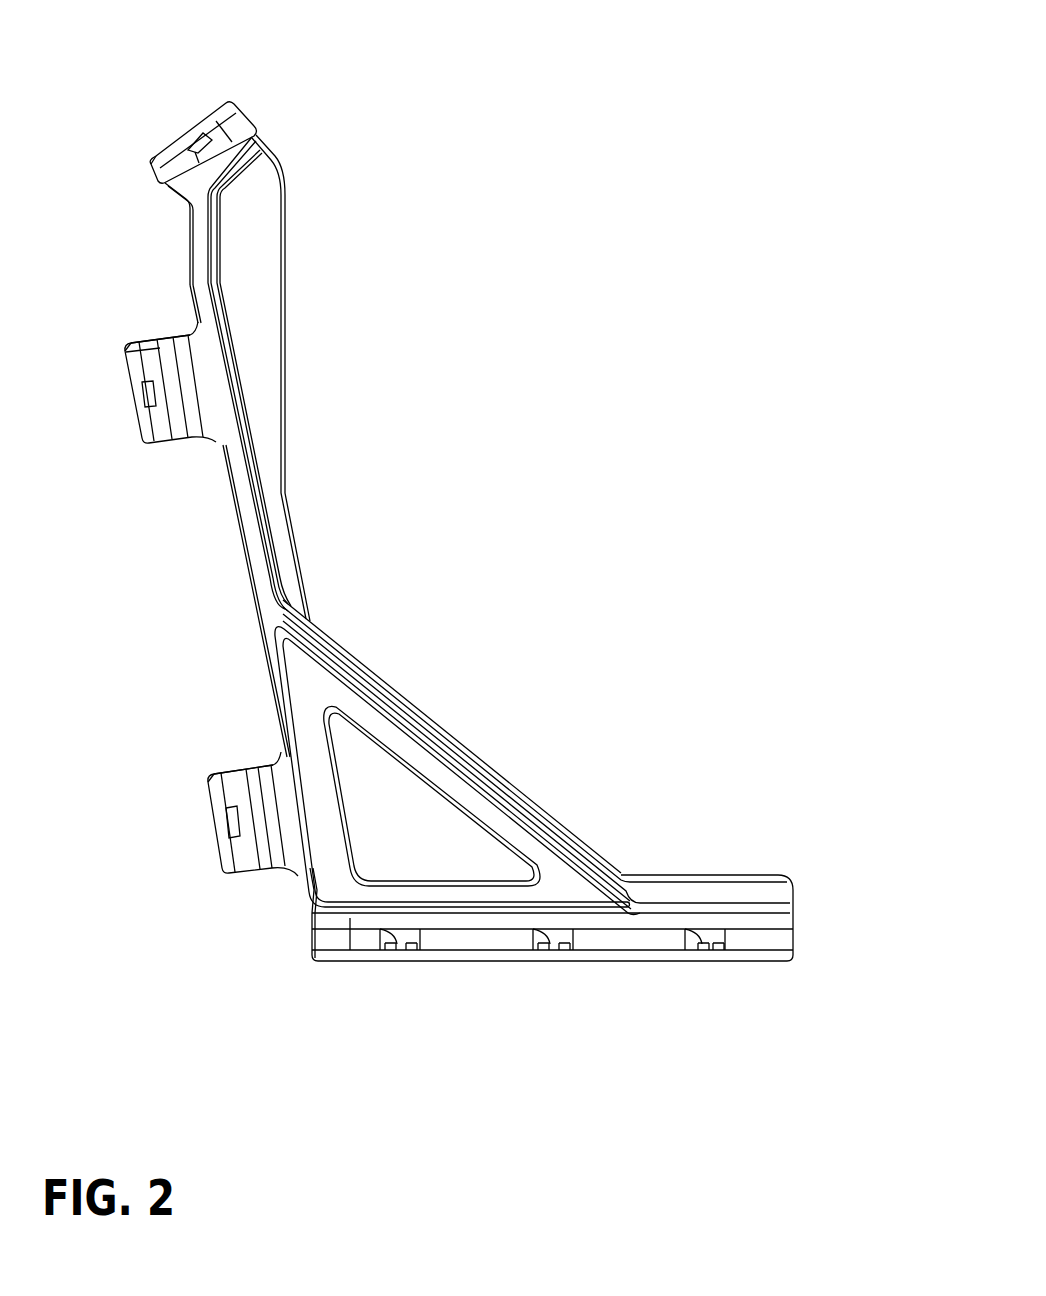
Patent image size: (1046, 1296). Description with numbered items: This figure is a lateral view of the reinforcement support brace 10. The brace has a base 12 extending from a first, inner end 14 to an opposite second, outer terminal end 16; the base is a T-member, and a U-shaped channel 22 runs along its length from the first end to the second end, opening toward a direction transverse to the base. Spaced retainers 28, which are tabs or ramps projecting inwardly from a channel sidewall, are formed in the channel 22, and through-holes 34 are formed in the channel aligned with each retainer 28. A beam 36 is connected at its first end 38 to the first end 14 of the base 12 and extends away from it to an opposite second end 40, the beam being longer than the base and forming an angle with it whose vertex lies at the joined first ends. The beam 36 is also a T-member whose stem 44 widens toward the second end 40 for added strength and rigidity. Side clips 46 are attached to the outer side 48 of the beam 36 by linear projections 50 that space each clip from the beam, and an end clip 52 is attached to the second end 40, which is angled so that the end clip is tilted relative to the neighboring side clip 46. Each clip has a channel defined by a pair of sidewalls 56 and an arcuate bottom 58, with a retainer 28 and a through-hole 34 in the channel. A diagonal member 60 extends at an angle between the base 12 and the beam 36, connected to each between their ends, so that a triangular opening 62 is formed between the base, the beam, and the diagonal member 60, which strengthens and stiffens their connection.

The support brace 10 is at (592, 351).
The base 12 is at (779, 868).
The first end 14 is at (350, 928).
The second end 16 is at (798, 887).
The channel 22 is at (770, 965).
The retainer 28 is at (198, 138).
The through-hole 34 is at (186, 152).
The beam 36 is at (246, 587).
The first end 38 is at (312, 912).
The second end 40 is at (185, 207).
The stem 44 is at (290, 256).
The side clip 46 is at (142, 393).
The outer side 48 is at (263, 657).
The linear projection 50 is at (186, 334).
The end clip 52 is at (210, 95).
The sidewall 56 is at (250, 110).
The arcuate bottom 58 is at (163, 177).
The diagonal member 60 is at (497, 762).
The triangular opening 62 is at (440, 793).